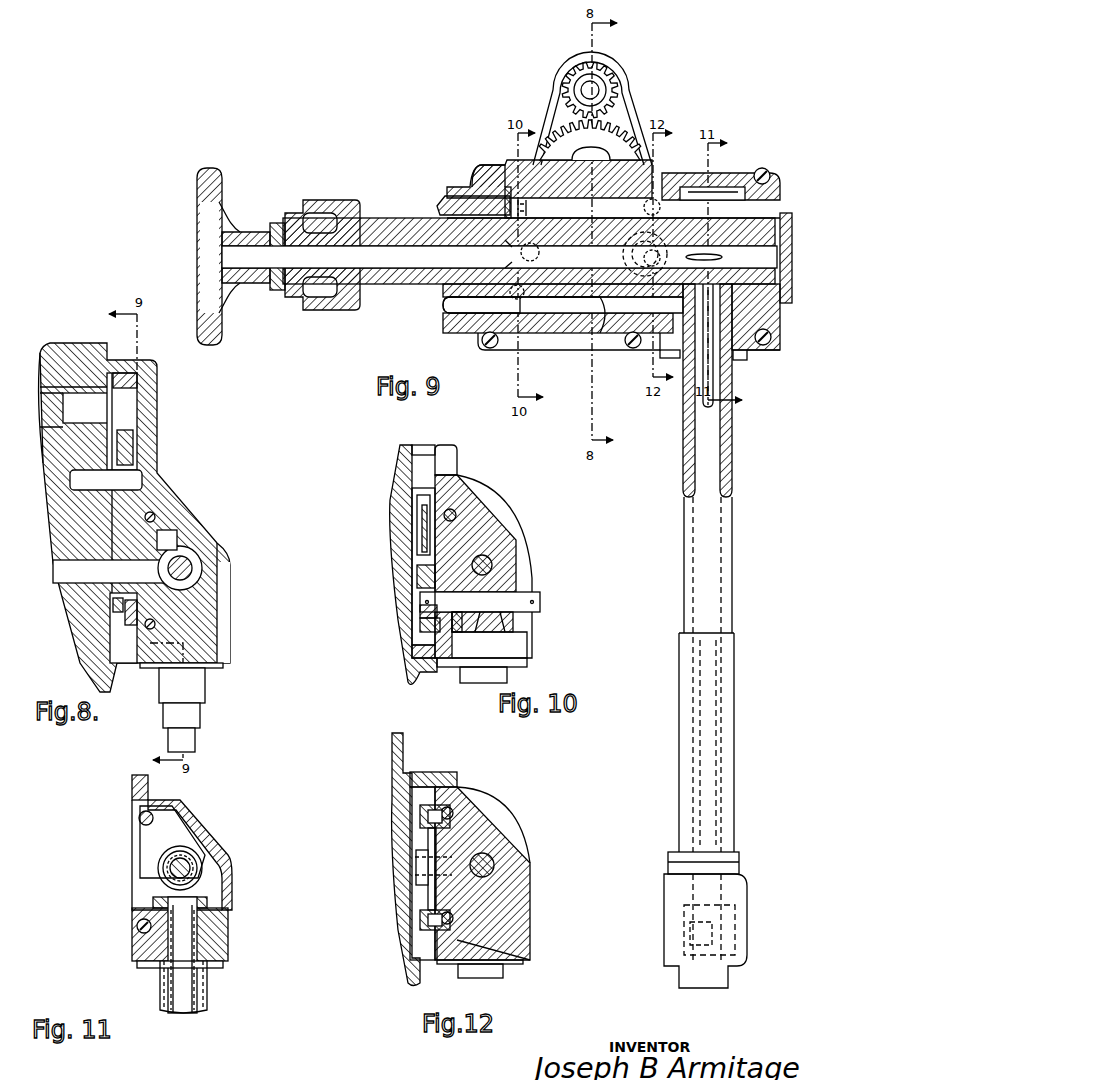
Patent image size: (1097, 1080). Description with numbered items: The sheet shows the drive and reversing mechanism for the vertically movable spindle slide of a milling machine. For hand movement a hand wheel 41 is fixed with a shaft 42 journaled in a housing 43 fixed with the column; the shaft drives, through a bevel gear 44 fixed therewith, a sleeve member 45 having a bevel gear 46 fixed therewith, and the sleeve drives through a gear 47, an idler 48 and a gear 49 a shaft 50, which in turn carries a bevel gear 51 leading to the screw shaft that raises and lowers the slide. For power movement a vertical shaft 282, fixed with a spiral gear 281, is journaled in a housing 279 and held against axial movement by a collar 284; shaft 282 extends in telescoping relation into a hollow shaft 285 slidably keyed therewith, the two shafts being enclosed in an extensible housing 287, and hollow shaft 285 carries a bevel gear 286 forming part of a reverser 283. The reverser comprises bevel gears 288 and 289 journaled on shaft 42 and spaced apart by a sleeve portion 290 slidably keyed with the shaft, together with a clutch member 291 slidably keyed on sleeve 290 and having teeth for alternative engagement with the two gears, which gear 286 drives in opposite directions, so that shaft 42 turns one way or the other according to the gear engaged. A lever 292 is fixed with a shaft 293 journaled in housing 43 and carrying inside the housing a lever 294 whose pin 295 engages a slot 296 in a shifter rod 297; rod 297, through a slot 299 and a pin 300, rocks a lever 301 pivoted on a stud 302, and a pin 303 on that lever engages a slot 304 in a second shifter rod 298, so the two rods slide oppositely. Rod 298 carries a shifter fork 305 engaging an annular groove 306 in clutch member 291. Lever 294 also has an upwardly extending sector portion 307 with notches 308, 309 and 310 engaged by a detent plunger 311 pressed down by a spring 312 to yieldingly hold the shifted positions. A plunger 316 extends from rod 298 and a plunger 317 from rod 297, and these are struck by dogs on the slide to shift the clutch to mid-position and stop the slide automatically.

In FIG. 9, the hand wheel 41 is at (207, 172).
In FIG. 9, the shaft 42 is at (402, 245).
In FIG. 10, the shaft 42 is at (500, 558).
In FIG. 9, the housing 43 is at (492, 165).
In FIG. 8, the housing 43 is at (180, 490).
In FIG. 10, the housing 43 is at (487, 532).
In FIG. 12, the housing 43 is at (520, 893).
In FIG. 9, the bevel gear 44 is at (567, 322).
In FIG. 8, the sleeve member 45 is at (130, 603).
In FIG. 8, the bevel gear 46 is at (165, 533).
In FIG. 8, the gear 47 is at (128, 614).
In FIG. 9, the idler 48 is at (623, 133).
In FIG. 8, the idler 48 is at (133, 449).
In FIG. 9, the gear 49 is at (613, 82).
In FIG. 8, the gear 49 is at (135, 384).
In FIG. 9, the shaft 50 is at (578, 88).
In FIG. 8, the shaft 50 is at (112, 372).
In FIG. 8, the bevel gear 51 is at (60, 360).
In FIG. 9, the housing 279 is at (740, 975).
In FIG. 9, the spiral gear 281 is at (745, 925).
In FIG. 9, the vertical shaft 282 is at (735, 463).
In FIG. 9, the reverser 283 is at (762, 166).
In FIG. 9, the collar 284 is at (745, 950).
In FIG. 9, the hollow shaft 285 is at (742, 360).
In FIG. 9, the bevel gear 286 is at (770, 303).
In FIG. 9, the extensible housing 287 is at (736, 572).
In FIG. 9, the bevel gear 288 is at (672, 198).
In FIG. 9, the bevel gear 289 is at (792, 222).
In FIG. 9, the sleeve portion 290 is at (723, 257).
In FIG. 9, the clutch member 291 is at (730, 190).
In FIG. 10, the lever 292 is at (540, 594).
In FIG. 9, the shaft 293 is at (473, 333).
In FIG. 10, the shaft 293 is at (520, 620).
In FIG. 9, the lever 294 is at (530, 338).
In FIG. 10, the lever 294 is at (420, 612).
In FIG. 10, the pin 295 is at (420, 630).
In FIG. 10, the slot 296 is at (458, 625).
In FIG. 9, the shifter rod 297 is at (608, 350).
In FIG. 10, the shifter rod 297 is at (500, 632).
In FIG. 12, the shifter rod 297 is at (512, 965).
In FIG. 11, the shifter rod 297 is at (136, 929).
In FIG. 9, the shifter rod 298 is at (680, 172).
In FIG. 12, the shifter rod 298 is at (455, 812).
In FIG. 11, the shifter rod 298 is at (139, 818).
In FIG. 12, the slot 299 is at (440, 950).
In FIG. 12, the pin 300 is at (420, 920).
In FIG. 12, the lever 301 is at (428, 896).
In FIG. 12, the stud 302 is at (495, 858).
In FIG. 12, the pin 303 is at (420, 818).
In FIG. 12, the slot 304 is at (447, 776).
In FIG. 9, the shifter fork 305 is at (748, 166).
In FIG. 11, the shifter fork 305 is at (152, 845).
In FIG. 9, the annular groove 306 is at (770, 350).
In FIG. 9, the sector portion 307 is at (447, 292).
In FIG. 10, the sector portion 307 is at (420, 578).
In FIG. 9, the notch 308 is at (503, 250).
In FIG. 9, the notch 309 is at (483, 188).
In FIG. 9, the notch 310 is at (548, 251).
In FIG. 9, the detent plunger 311 is at (507, 165).
In FIG. 10, the detent plunger 311 is at (412, 492).
In FIG. 9, the spring 312 is at (536, 206).
In FIG. 10, the spring 312 is at (417, 540).
In FIG. 9, the plunger 316 is at (447, 207).
In FIG. 9, the plunger 317 is at (433, 308).